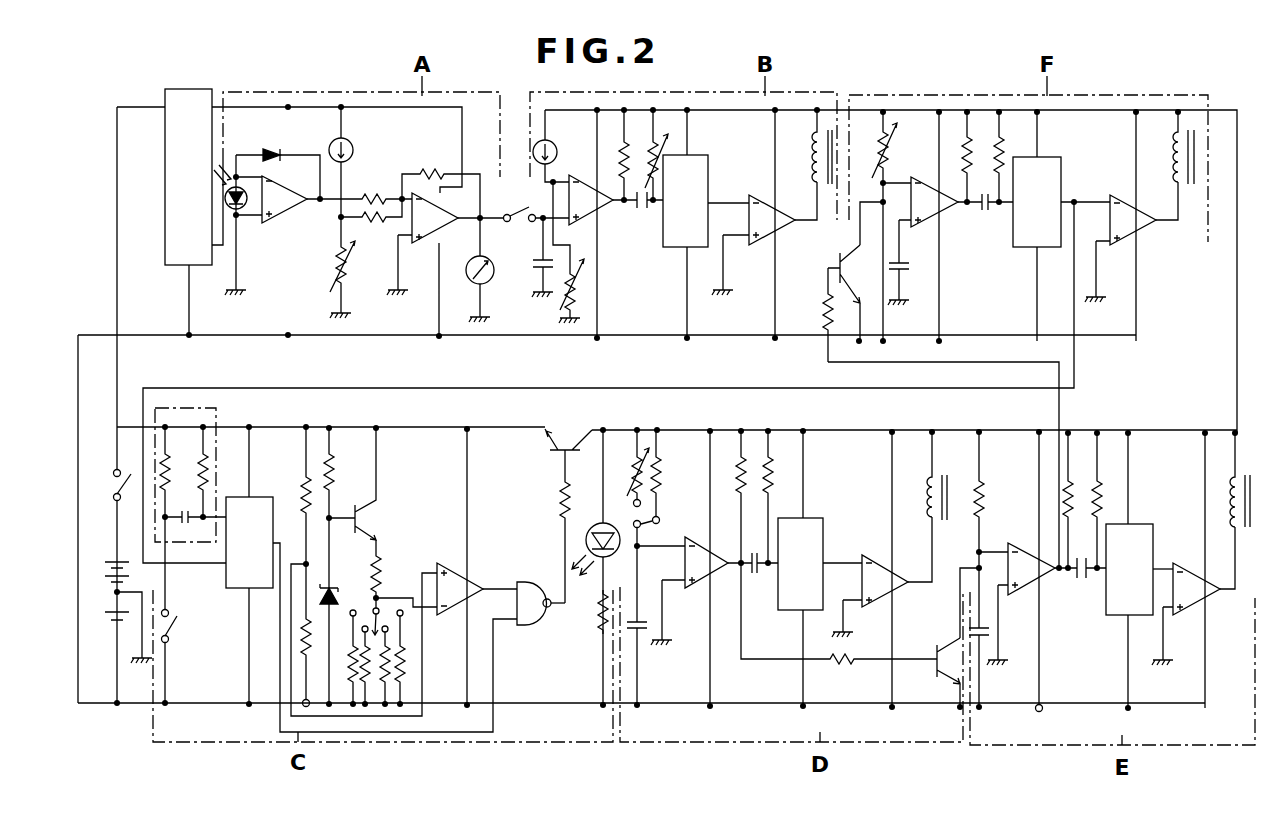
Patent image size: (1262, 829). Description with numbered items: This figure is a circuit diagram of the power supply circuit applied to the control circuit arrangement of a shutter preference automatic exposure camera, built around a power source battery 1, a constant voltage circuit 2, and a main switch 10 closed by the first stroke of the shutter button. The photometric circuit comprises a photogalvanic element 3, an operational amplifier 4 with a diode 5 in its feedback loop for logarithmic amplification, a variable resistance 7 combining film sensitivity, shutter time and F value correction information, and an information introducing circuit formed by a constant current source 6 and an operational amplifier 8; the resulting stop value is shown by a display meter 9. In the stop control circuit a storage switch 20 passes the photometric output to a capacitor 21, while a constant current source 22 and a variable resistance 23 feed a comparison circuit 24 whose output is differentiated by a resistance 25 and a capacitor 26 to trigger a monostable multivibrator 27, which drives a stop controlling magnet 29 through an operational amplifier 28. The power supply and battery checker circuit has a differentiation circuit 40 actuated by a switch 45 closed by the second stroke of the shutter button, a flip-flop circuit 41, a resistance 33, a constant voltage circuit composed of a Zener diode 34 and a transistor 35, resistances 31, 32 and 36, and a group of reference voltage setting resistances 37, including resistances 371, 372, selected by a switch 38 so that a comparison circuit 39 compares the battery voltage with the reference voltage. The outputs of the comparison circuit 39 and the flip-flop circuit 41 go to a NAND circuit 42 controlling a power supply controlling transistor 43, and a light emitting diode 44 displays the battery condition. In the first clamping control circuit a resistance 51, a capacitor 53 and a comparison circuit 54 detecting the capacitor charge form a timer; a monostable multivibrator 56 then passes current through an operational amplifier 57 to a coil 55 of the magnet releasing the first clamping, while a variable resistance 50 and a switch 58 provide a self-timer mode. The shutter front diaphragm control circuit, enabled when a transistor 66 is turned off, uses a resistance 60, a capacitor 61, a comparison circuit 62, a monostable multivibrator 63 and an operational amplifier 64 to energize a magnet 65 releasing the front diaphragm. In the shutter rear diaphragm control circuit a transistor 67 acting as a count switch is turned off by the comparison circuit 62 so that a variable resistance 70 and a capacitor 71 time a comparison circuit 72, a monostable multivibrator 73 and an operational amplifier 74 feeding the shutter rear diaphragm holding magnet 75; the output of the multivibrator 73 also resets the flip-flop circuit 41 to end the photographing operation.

The power source battery 1 is at (104, 582).
The constant voltage circuit 2 is at (188, 177).
The photogalvanic element 3 is at (228, 225).
The operational amplifier 4 is at (284, 199).
The diode 5 is at (271, 146).
The constant current source 6 is at (348, 175).
The variable resistance 7 is at (332, 263).
The operational amplifier 8 is at (422, 264).
The display meter 9 is at (473, 270).
The main switch 10 is at (111, 486).
The storage switch 20 is at (537, 229).
The capacitor 21 is at (536, 272).
The constant current source 22 is at (557, 146).
The variable resistance 23 is at (578, 290).
The comparison circuit 24 is at (591, 200).
The resistance 25 is at (668, 155).
The capacitor 26 is at (642, 213).
The monostable multivibrator 27 is at (685, 201).
The operational amplifier 28 is at (753, 245).
The stop controlling magnet 29 is at (807, 147).
The resistance 31 is at (294, 495).
The resistance 32 is at (300, 636).
The resistance 33 is at (343, 473).
The Zener diode 34 is at (332, 592).
The transistor 35 is at (370, 521).
The resistance 36 is at (382, 570).
The group of reference voltage setting resistances 37 is at (405, 656).
The resistance 371 is at (406, 684).
The resistor 372 is at (374, 680).
The switch 38 is at (374, 620).
The comparison circuit 39 is at (460, 589).
The differentiation circuit 40 is at (208, 417).
The flip-flop circuit 41 is at (262, 500).
The NAND circuit 42 is at (524, 584).
The power supply controlling transistor 43 is at (552, 444).
The light emitting diode 44 is at (612, 530).
The switch 45 is at (180, 610).
The variable resistance 50 is at (627, 468).
The resistance 51 is at (668, 473).
The capacitor 53 is at (640, 612).
The comparison circuit 54 is at (689, 591).
The coil of magnet 55 is at (950, 476).
The monostable multivibrator 56 is at (800, 564).
The operational amplifier 57 is at (870, 596).
The switch 58 is at (666, 514).
The resistance 60 is at (992, 500).
The capacitor 61 is at (987, 632).
The comparison circuit 62 is at (1021, 604).
The monostable multivibrator 63 is at (1129, 569).
The operational amplifier 64 is at (1186, 614).
The magnet 65 is at (1229, 480).
The transistor 66 is at (950, 671).
The transistor 67 is at (841, 315).
The variable resistance 70 is at (874, 226).
The capacitor 71 is at (843, 278).
The comparison circuit 72 is at (923, 241).
The monostable multivibrator 73 is at (1037, 202).
The operational amplifier 74 is at (1120, 248).
The shutter rear diaphragm holding magnet 75 is at (1171, 148).